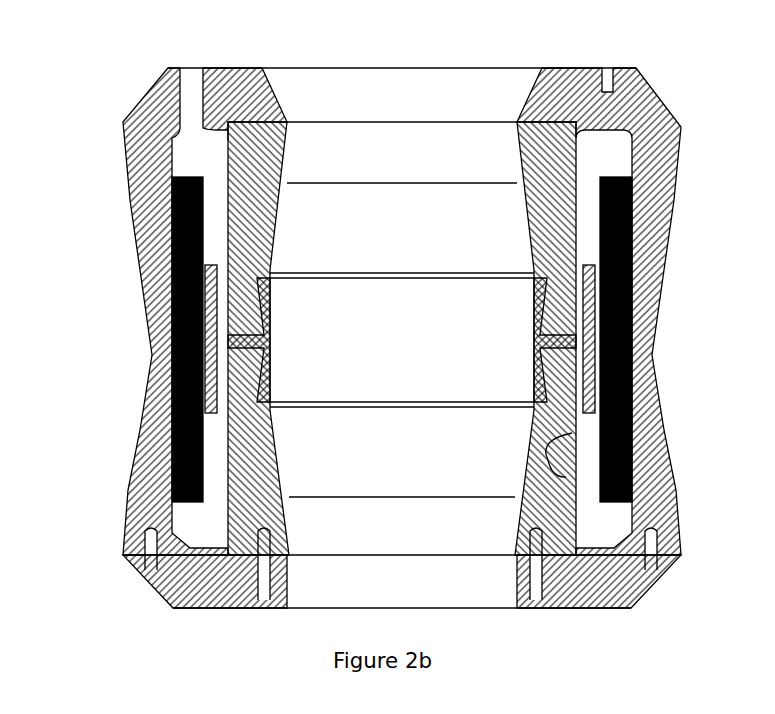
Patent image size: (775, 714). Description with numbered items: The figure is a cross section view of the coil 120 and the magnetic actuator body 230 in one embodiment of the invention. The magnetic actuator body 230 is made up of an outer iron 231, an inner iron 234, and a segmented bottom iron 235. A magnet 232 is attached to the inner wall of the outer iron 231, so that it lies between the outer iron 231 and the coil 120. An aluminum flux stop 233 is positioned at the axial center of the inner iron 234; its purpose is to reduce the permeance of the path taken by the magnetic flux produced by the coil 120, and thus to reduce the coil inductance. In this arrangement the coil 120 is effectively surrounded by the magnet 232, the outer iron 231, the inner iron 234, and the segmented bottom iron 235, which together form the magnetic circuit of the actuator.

The coil 120 is at (215, 262).
The magnetic actuator body 230 is at (95, 302).
The outer iron 231 is at (439, 319).
The magnet 232 is at (459, 339).
The aluminum flux stop 233 is at (545, 363).
The inner iron 234 is at (553, 469).
The segmented bottom iron 235 is at (583, 600).